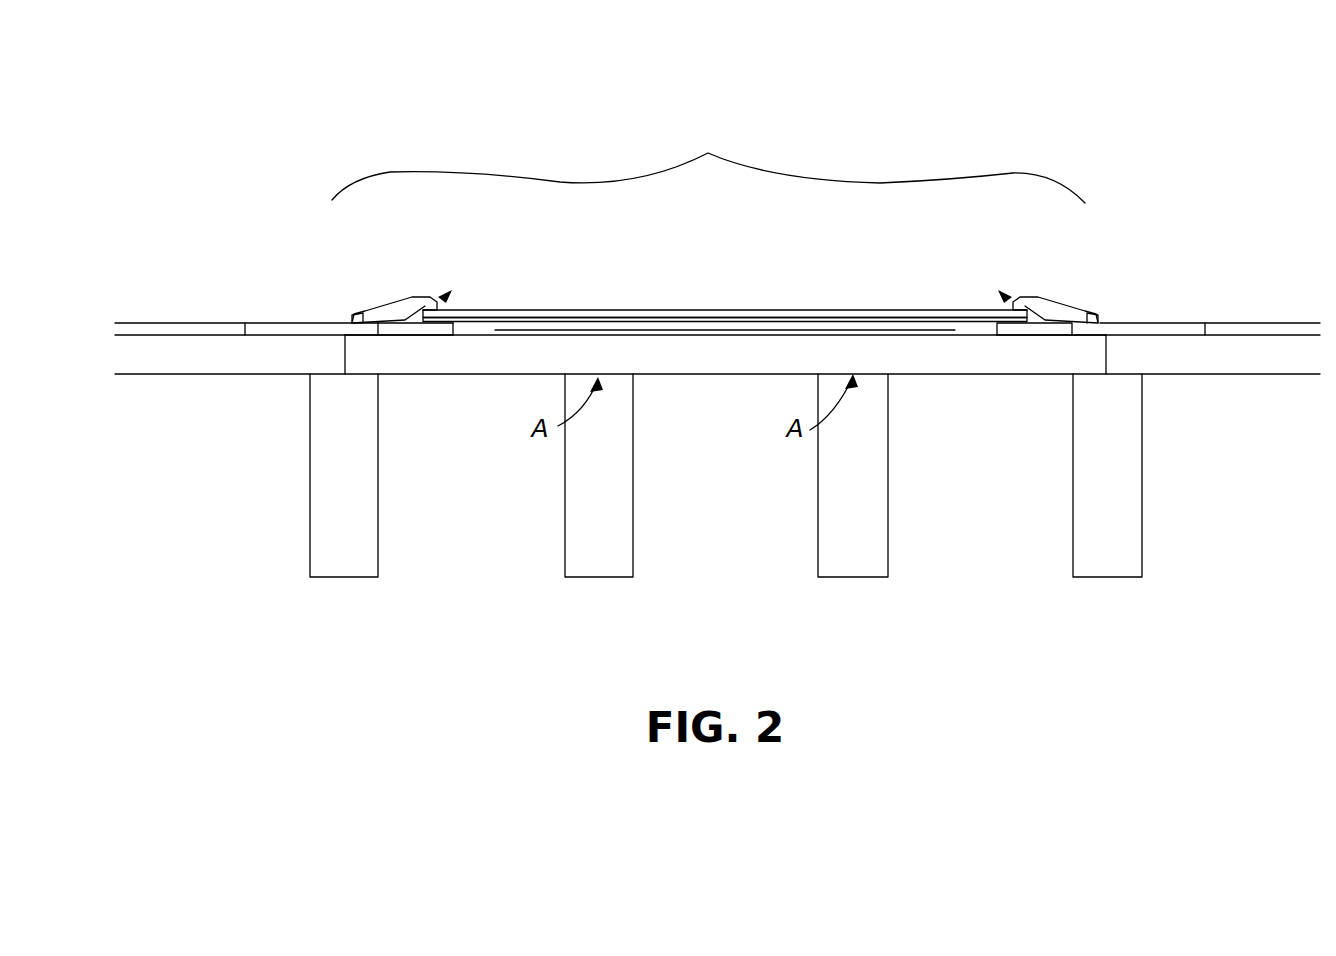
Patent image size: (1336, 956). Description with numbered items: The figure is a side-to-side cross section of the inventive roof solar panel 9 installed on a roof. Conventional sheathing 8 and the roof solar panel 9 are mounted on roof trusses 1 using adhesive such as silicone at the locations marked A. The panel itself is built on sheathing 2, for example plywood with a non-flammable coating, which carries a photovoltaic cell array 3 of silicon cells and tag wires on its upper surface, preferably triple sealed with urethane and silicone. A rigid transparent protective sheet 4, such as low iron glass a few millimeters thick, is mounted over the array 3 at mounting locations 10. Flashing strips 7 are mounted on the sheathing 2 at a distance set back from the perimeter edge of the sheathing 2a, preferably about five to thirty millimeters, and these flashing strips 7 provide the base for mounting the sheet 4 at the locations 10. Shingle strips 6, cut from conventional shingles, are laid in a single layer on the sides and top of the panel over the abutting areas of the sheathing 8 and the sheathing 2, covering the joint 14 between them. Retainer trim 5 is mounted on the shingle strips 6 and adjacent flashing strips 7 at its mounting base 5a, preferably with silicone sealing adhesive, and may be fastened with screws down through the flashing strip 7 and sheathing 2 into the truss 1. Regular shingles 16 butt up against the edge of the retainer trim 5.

The roof truss 1 is at (362, 495).
The sheathing 2 is at (918, 363).
The perimeter edge of the sheathing 2a is at (345, 335).
The photovoltaic cell array 3 is at (784, 318).
The rigid transparent protective sheet 4 is at (708, 312).
The retainer trim 5 is at (388, 299).
The mounting base 5a is at (360, 316).
The shingle strip 6 is at (320, 323).
The flashing strip 7 is at (415, 337).
The conventional sheathing 8 is at (200, 362).
The roof solar panel 9 is at (708, 161).
The mounting locations 10 is at (446, 296).
The joint 14 is at (345, 356).
The regular shingles 16 is at (208, 323).